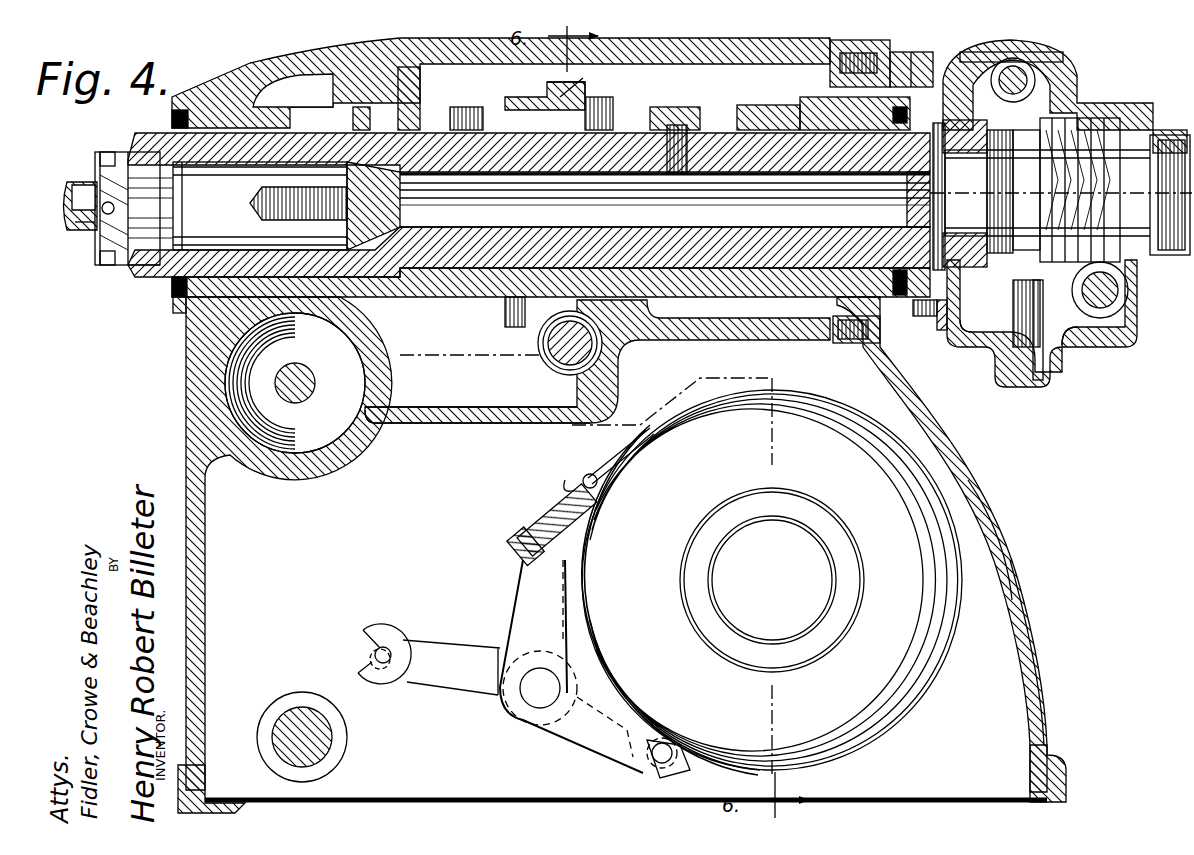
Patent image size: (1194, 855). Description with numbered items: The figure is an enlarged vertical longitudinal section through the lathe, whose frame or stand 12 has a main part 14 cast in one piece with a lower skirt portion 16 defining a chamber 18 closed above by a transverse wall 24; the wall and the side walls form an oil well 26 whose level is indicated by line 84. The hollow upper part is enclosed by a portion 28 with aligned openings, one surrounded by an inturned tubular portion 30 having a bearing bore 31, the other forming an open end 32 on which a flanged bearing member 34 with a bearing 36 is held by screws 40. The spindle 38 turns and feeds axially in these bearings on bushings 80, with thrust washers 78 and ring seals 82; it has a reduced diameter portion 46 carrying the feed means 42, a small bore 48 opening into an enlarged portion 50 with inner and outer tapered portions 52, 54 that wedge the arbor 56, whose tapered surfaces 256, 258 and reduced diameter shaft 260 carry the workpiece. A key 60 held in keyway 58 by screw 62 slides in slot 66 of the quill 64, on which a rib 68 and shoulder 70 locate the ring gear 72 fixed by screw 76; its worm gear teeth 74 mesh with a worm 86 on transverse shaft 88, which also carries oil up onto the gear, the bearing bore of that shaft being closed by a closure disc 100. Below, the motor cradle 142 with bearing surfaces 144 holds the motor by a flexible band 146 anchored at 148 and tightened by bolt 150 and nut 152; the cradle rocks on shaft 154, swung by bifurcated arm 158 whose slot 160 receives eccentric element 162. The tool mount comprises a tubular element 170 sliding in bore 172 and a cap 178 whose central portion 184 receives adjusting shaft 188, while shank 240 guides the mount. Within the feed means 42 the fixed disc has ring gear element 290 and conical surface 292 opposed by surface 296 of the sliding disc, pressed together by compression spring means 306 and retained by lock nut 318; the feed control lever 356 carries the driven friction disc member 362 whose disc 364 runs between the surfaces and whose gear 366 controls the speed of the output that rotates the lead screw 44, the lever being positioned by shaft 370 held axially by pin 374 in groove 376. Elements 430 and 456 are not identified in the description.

The frame or stand 12 is at (645, 545).
The main part 14 is at (985, 510).
The skirt portion 16 is at (1005, 552).
The chamber 18 is at (1010, 592).
The transverse wall 24 is at (480, 425).
The well 26 is at (428, 425).
The enclosing portion 28 is at (425, 48).
The inturned tubular portion 30 is at (300, 102).
The bearing bore 31 is at (363, 108).
The open end 32 is at (878, 52).
The flanged bearing member 34 is at (902, 80).
The bearing 36 is at (800, 104).
The spindle 38 is at (410, 110).
The screws 40 is at (890, 65).
The feed means 42 is at (1032, 218).
The lead screw 44 is at (930, 312).
The reduced diameter portion 46 is at (945, 212).
The small diameter bore 48 is at (662, 228).
The enlarged diameter portion 50 is at (238, 194).
The inner tapered portion 52 is at (346, 198).
The outer tapered portion 54 is at (162, 182).
The arbor 56 is at (95, 172).
The axial keyway 58 is at (676, 108).
The key 60 is at (760, 106).
The screw 62 is at (682, 122).
The quill 64 is at (480, 297).
The slot 66 is at (466, 108).
The circumferential rib 68 is at (612, 112).
The shoulder 70 is at (586, 100).
The ring gear 72 is at (545, 88).
The worm gear teeth 74 is at (598, 64).
The screw 76 is at (512, 320).
The thrust washers 78 is at (385, 303).
The bushings 80 is at (290, 192).
The ring seals 82 is at (172, 120).
The oil level line 84 is at (447, 360).
The worm 86 is at (552, 358).
The transverse shaft 88 is at (568, 357).
The closure disc 100 is at (785, 580).
The cradle 142 is at (518, 611).
The bearing surfaces 144 is at (682, 745).
The flexible band 146 is at (925, 700).
The band anchorage 148 is at (648, 770).
The threaded bolt 150 is at (575, 485).
The nut 152 is at (522, 518).
The shaft 154 is at (542, 705).
The bifurcated arm 158 is at (470, 680).
The slot 160 is at (358, 650).
The eccentric element 162 is at (382, 648).
The tubular element 170 is at (305, 462).
The bore 172 is at (262, 468).
The cap 178 is at (345, 438).
The central portion 184 is at (325, 445).
The adjusting shaft 188 is at (296, 377).
The shank 240 is at (320, 748).
The tapered surface 256 is at (402, 220).
The tapered surface 258 is at (163, 272).
The reduced diameter shaft 260 is at (93, 230).
The ring gear element 290 is at (945, 182).
The frusto-conical surface 292 is at (1000, 138).
The frusto-conical surface 296 is at (1058, 140).
The compression spring means 306 is at (1040, 300).
The lock nut 318 is at (1172, 258).
The feed control lever 356 is at (955, 336).
The driven friction disc member 362 is at (1016, 390).
The disc element 364 is at (980, 352).
The gear 366 is at (1066, 352).
The shaft 370 is at (1060, 92).
The pin 374 is at (1032, 64).
The circumferential groove 376 is at (1040, 76).
The housing boss 430 is at (1137, 325).
The cover plate 456 is at (947, 60).